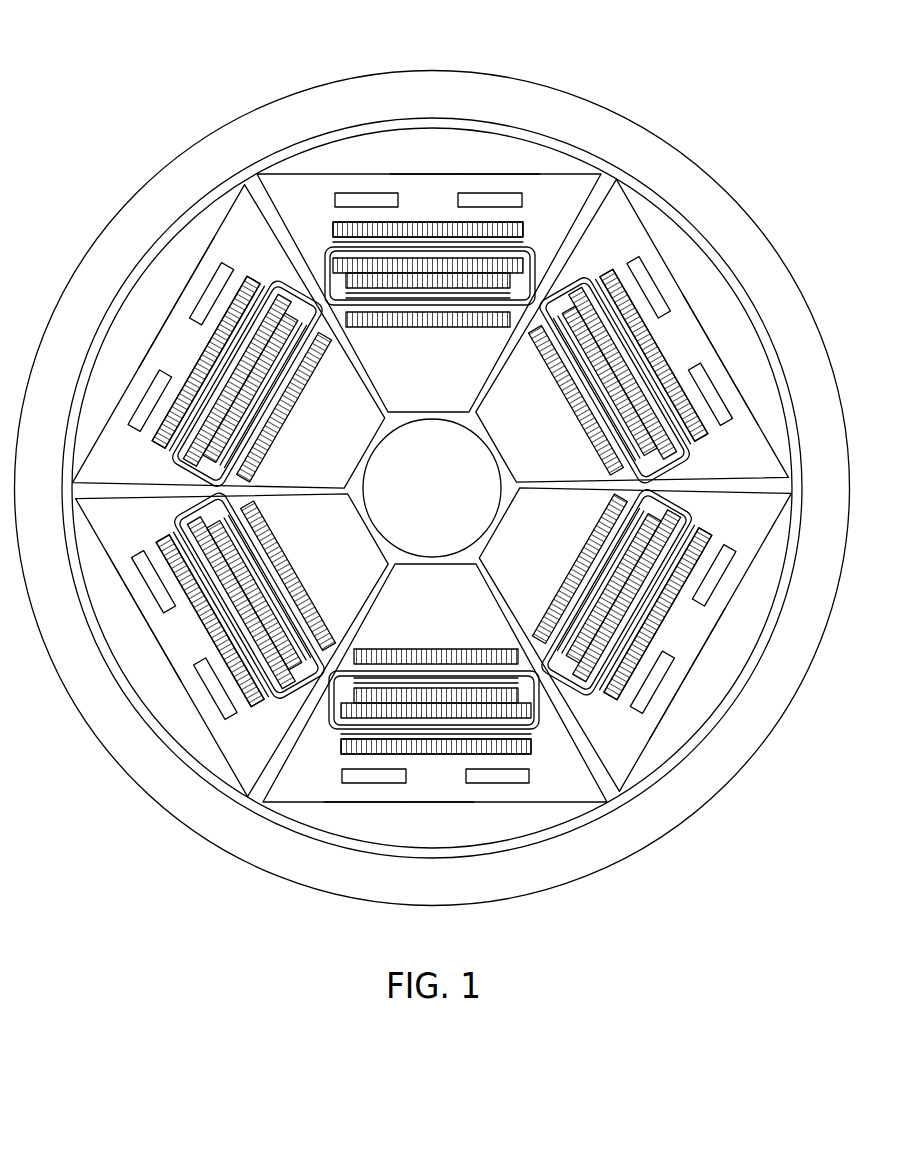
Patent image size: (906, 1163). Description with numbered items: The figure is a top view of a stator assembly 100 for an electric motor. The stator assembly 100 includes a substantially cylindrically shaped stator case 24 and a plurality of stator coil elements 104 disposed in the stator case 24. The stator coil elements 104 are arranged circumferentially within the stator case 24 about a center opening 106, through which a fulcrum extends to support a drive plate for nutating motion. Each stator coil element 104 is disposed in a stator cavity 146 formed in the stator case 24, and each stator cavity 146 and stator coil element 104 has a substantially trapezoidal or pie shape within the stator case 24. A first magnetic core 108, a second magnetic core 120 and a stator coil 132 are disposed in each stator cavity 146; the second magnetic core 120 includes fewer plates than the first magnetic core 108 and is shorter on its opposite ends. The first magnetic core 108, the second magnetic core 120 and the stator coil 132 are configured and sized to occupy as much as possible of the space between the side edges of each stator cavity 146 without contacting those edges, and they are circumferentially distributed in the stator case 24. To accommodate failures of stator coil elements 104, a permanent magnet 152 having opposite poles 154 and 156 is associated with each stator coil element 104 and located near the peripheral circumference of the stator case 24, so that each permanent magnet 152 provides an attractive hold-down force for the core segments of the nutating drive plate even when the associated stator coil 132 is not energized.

The stator assembly 100 is at (737, 105).
The stator case 24 is at (430, 70).
The stator coil element 104 is at (500, 174).
The center opening 106 is at (497, 481).
The first magnetic core 108 is at (528, 220).
The second magnetic core 120 is at (428, 328).
The stator coil 132 is at (327, 247).
The stator cavity 146 is at (469, 390).
The permanent magnet 152 is at (425, 176).
The pole 154 is at (482, 193).
The pole 156 is at (385, 193).